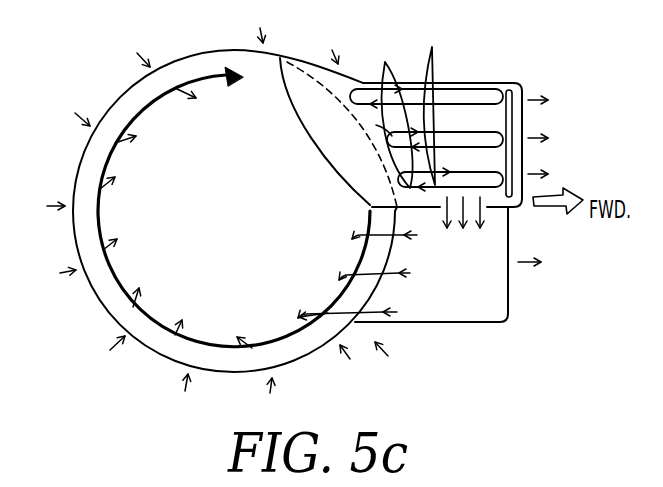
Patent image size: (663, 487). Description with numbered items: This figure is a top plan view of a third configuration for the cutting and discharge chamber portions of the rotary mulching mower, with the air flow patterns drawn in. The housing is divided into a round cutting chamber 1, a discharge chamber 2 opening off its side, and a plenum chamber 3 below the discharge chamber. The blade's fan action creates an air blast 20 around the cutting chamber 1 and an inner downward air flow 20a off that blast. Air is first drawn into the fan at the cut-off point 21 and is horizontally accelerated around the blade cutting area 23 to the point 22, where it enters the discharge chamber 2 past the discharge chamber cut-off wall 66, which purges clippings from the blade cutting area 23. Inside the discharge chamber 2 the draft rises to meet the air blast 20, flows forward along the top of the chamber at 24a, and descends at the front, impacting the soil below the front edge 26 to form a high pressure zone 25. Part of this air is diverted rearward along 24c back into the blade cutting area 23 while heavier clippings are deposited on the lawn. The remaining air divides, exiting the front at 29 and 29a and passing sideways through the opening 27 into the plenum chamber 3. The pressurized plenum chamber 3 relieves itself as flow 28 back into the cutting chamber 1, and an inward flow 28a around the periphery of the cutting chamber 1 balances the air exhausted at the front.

The cutting chamber 1 is at (200, 165).
The discharge chamber 2 is at (440, 137).
The plenum chamber 3 is at (457, 280).
The air blast 20 is at (100, 218).
The inner downward air flow 20a is at (214, 216).
The cut-off point 21 is at (368, 206).
The discharge chamber entry point 22 is at (245, 80).
The blade cutting area 23 is at (362, 118).
The forward flow along discharge chamber top 24a is at (391, 111).
The rearward flow line 24c is at (433, 103).
The high pressure zone 25 is at (504, 115).
The front edge 26 is at (528, 88).
The opening 27 is at (440, 232).
The flow into cutting chamber 28 is at (398, 317).
The inward peripheral air flow 28a is at (220, 220).
The front exhaust flow 29 is at (552, 96).
The front exhaust flow 29a is at (549, 259).
The discharge chamber cut-off wall 66 is at (355, 197).